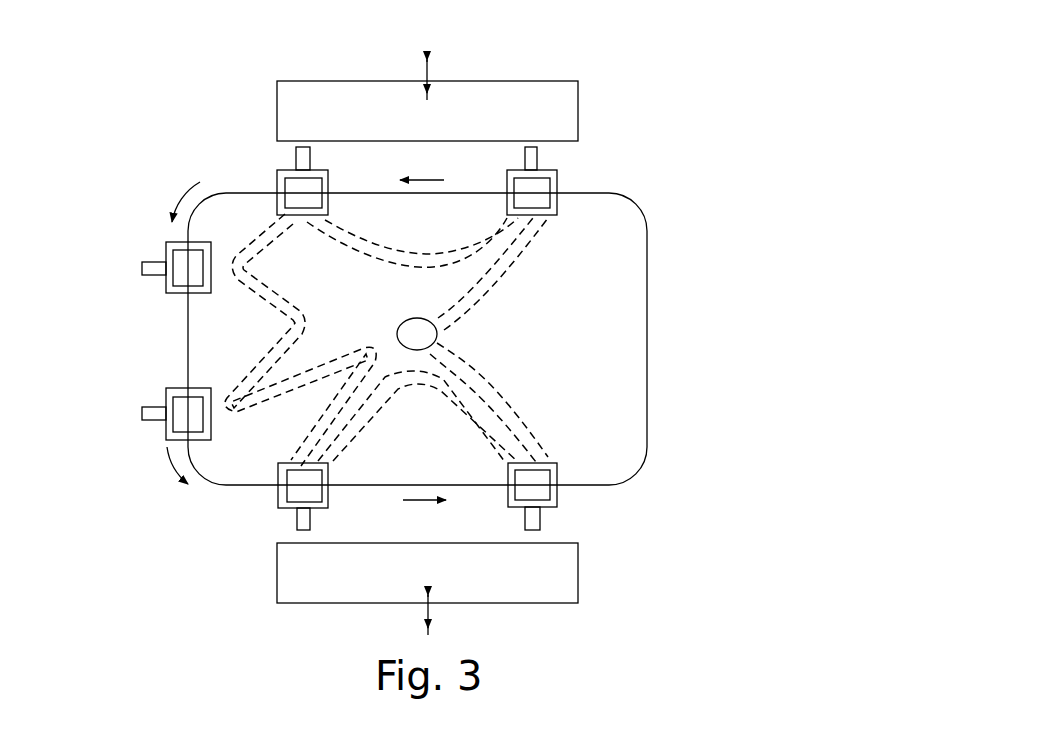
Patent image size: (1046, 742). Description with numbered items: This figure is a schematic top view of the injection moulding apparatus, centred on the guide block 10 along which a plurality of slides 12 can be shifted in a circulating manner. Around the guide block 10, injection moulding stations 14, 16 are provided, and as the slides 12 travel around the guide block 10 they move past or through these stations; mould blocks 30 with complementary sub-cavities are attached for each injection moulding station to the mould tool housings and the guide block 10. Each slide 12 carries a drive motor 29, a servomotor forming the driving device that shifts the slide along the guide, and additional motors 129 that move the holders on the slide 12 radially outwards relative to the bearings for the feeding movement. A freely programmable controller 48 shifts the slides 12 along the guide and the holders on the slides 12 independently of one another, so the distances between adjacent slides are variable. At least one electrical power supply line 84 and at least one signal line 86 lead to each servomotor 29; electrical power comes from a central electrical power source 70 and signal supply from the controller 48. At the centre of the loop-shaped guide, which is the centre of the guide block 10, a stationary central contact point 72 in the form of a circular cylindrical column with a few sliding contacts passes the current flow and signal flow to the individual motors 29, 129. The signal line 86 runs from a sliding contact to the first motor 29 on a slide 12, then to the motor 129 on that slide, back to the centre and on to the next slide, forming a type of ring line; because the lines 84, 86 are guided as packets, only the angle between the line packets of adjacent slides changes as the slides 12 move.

The guide block 10 is at (628, 353).
The slide 12 is at (557, 465).
The injection moulding station 14 is at (650, 565).
The injection moulding station 16 is at (660, 166).
The drive motor 29 is at (540, 488).
The mould block 30 is at (503, 98).
The controller 48 is at (437, 335).
The central electrical power source 70 is at (402, 323).
The central contact point 72 is at (417, 334).
The electrical power supply line 84 is at (522, 397).
The signal line 86 is at (510, 430).
The motor 129 is at (302, 156).